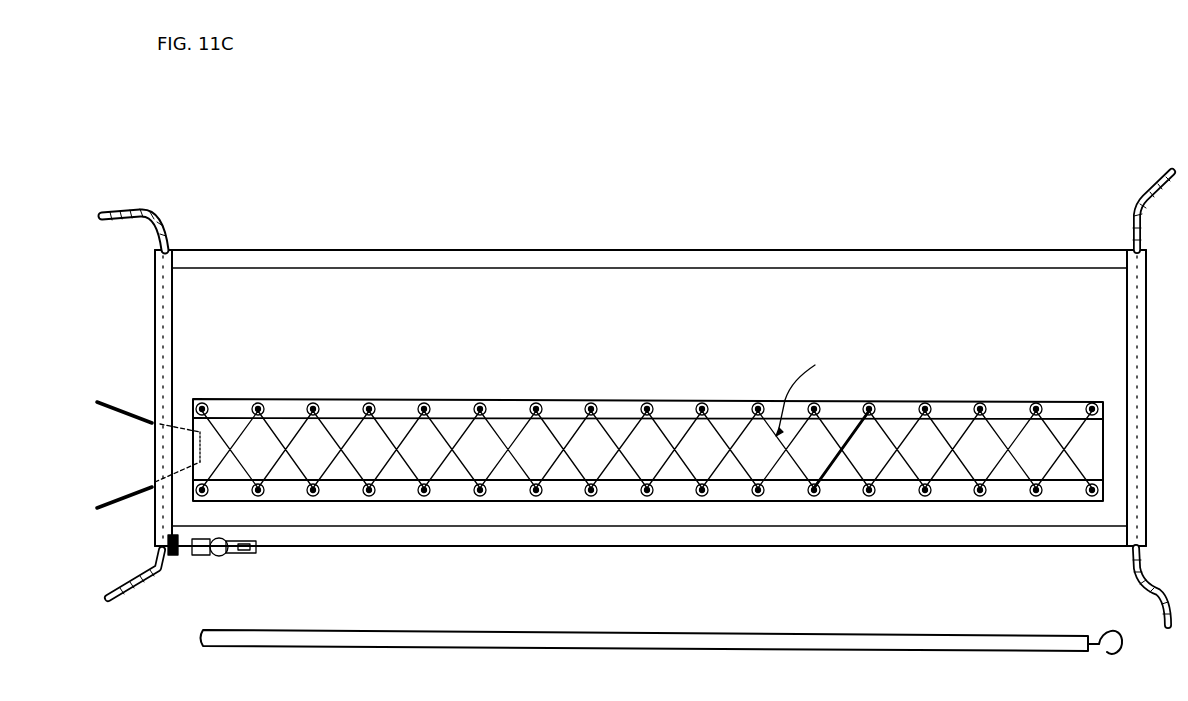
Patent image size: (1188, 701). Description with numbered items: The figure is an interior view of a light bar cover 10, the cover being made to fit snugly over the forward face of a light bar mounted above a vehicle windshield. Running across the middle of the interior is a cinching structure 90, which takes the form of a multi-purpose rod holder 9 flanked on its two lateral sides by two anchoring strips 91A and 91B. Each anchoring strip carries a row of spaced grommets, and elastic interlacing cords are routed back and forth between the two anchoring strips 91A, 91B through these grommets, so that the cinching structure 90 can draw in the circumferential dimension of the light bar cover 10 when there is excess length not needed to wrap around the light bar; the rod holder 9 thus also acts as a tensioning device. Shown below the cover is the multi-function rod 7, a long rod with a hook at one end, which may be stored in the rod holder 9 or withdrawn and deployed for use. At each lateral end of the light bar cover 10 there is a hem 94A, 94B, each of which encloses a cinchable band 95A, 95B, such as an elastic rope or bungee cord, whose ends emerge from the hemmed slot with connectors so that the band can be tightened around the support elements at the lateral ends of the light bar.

The multi-function rod 7 is at (448, 638).
The multi-purpose rod holder 9 is at (1068, 430).
The light bar cover 10 is at (297, 300).
The cinching structure 90 is at (953, 378).
The anchoring strip 91A is at (449, 402).
The anchoring strip 91B is at (623, 493).
The hem 94A is at (172, 250).
The hem 94B is at (1133, 250).
The cinchable band 95A is at (147, 212).
The cinchable band 95B is at (1155, 200).